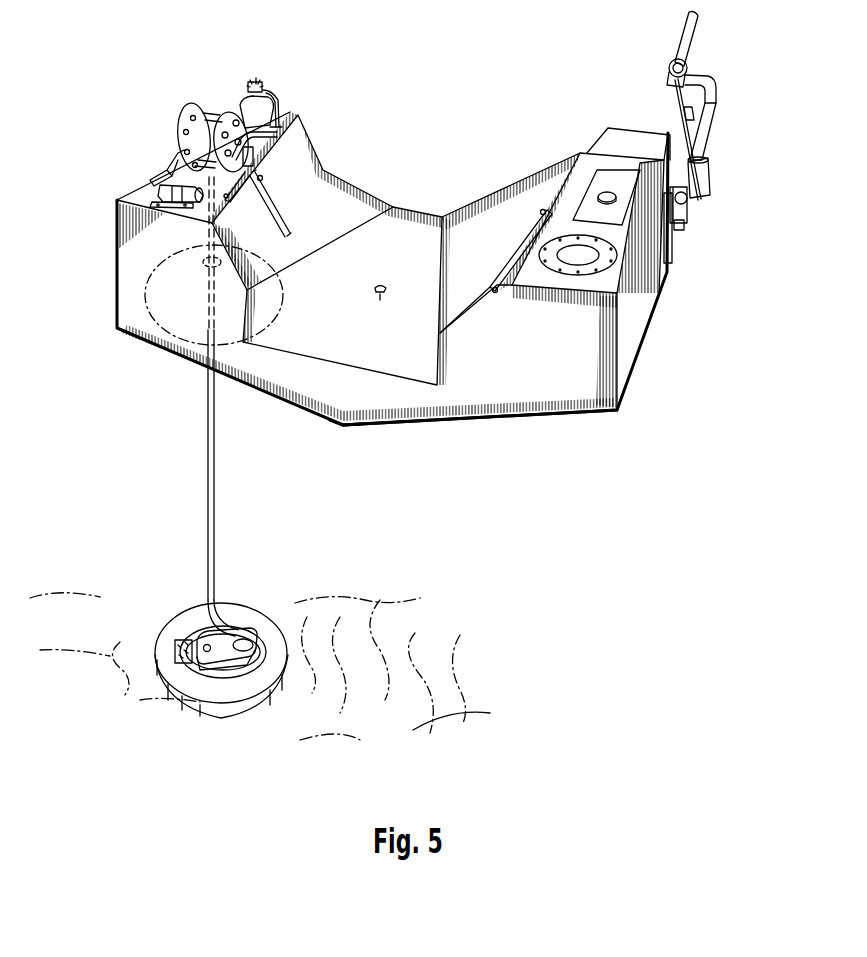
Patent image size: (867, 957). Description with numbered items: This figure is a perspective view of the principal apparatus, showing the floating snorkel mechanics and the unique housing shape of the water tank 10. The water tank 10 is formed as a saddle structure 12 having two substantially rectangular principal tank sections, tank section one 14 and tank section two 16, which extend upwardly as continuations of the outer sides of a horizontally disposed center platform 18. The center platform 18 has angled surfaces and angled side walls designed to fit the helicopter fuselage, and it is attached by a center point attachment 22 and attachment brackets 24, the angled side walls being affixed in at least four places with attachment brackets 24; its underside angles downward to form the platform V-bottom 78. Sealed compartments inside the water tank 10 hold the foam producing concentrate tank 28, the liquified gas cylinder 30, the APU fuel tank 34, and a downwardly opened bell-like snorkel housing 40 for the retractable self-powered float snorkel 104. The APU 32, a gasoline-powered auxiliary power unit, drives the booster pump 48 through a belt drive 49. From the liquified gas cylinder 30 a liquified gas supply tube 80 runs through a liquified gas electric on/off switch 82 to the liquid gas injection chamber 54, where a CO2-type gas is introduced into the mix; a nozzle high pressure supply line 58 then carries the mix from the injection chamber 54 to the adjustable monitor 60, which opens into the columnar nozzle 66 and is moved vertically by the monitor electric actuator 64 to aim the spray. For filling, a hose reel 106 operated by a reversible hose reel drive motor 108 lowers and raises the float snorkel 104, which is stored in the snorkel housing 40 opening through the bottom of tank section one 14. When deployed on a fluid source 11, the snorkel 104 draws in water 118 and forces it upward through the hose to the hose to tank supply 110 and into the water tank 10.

The water tank 10 is at (180, 355).
The fluid source 11 is at (152, 163).
The saddle structure 12 is at (390, 377).
The tank section one 14 is at (157, 260).
The tank section two 16 is at (572, 375).
The center platform 18 is at (408, 233).
The center point attachment 22 is at (375, 306).
The attachment brackets 24 is at (223, 257).
The foam producing concentrate tank 28 is at (603, 260).
The liquified gas cylinder 30 is at (247, 103).
The APU 32 is at (680, 205).
The APU fuel tank 34 is at (600, 183).
The snorkel housing 40 is at (158, 330).
The booster pump 48 is at (673, 250).
The belt drive 49 is at (682, 228).
The liquid gas injection chamber 54 is at (698, 175).
The nozzle high pressure supply line 58 is at (707, 122).
The adjustable monitor 60 is at (667, 66).
The monitor electric actuator 64 is at (683, 115).
The columnar nozzle 66 is at (688, 33).
The platform V-bottom 78 is at (345, 428).
The liquified gas supply tube 80 is at (277, 93).
The liquified gas electric on/off switch 82 is at (263, 90).
The self-powered float snorkel 104 is at (188, 622).
The hose reel 106 is at (190, 117).
The hose reel drive motor 108 is at (170, 190).
The hose to tank supply 110 is at (247, 150).
The water 118 is at (350, 683).